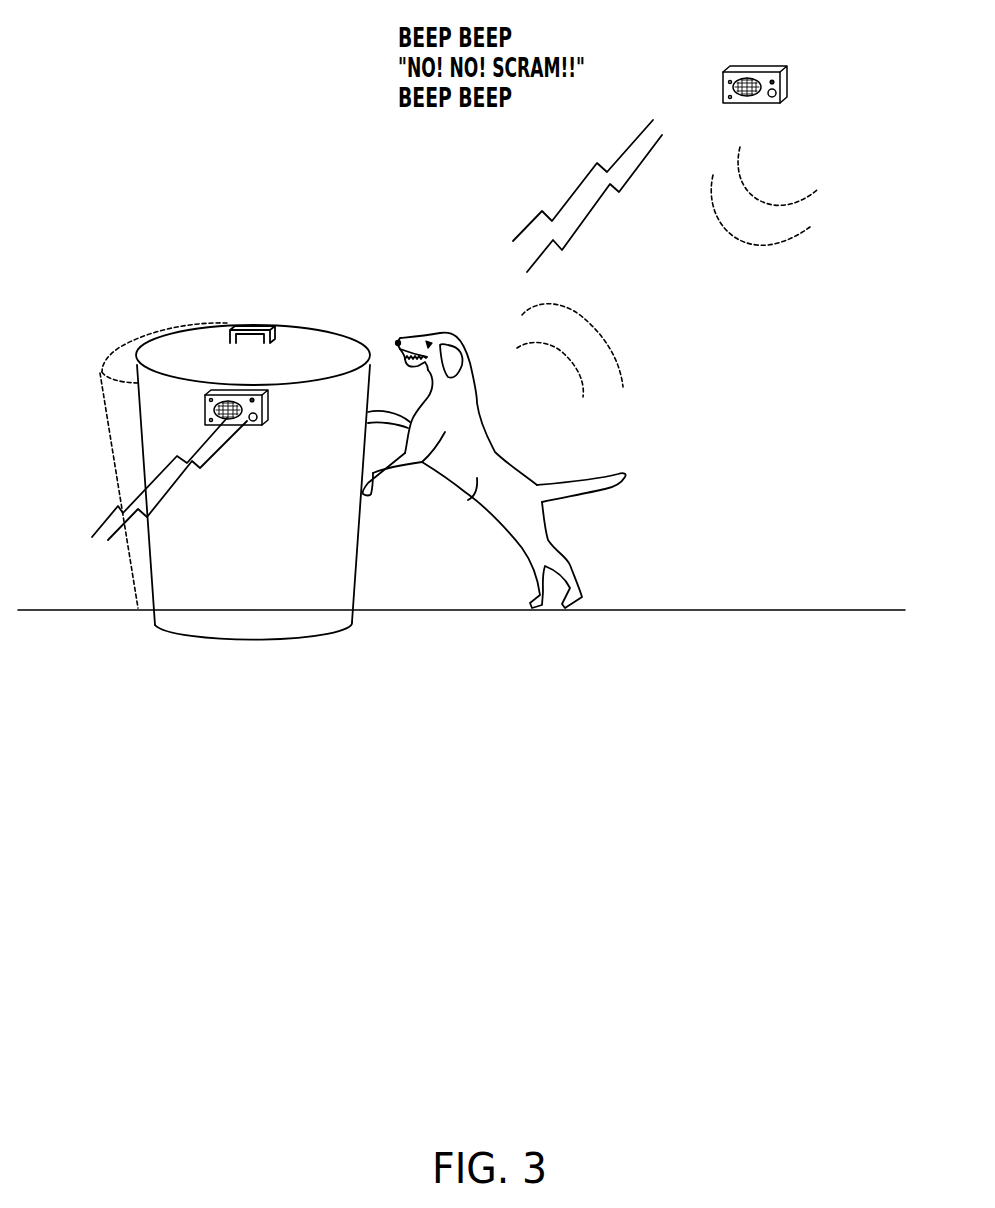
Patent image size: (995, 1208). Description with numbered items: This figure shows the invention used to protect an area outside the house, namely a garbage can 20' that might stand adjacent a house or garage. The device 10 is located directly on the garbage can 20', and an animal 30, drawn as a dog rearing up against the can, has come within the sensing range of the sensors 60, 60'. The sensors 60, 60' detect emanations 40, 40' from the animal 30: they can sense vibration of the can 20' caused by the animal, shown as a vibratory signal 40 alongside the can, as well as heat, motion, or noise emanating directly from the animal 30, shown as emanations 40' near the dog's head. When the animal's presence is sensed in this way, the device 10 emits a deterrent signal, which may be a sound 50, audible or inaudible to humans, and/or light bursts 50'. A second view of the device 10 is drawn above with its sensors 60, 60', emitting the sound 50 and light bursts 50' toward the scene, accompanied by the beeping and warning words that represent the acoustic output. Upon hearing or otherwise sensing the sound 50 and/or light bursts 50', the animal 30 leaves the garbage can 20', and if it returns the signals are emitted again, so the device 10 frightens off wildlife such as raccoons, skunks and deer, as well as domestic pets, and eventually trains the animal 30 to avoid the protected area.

The device 10 is at (242, 445).
The garbage can 20' is at (267, 443).
The animal 30 is at (468, 500).
The emanations 40 is at (139, 453).
The emanations 40' is at (625, 358).
The sound 50 is at (377, 330).
The light bursts 50' is at (789, 210).
The sensor 60 is at (555, 217).
The sensor 60' is at (512, 241).